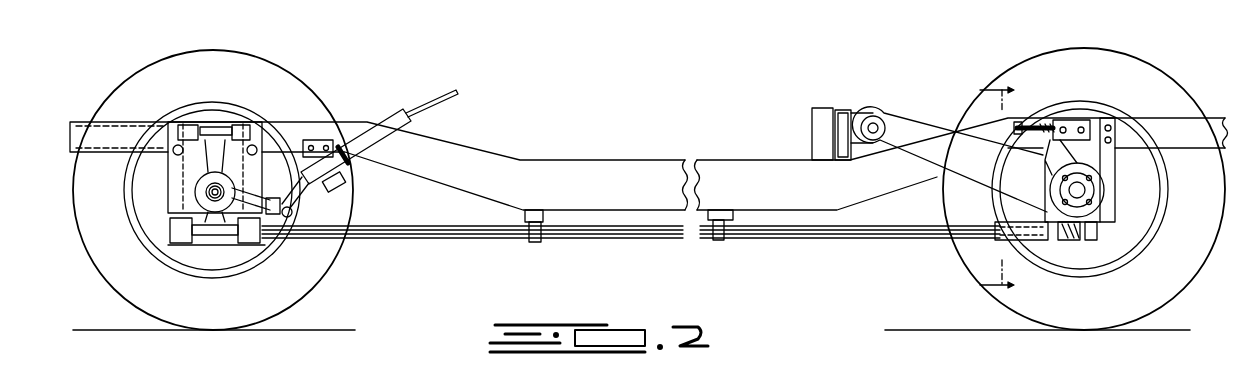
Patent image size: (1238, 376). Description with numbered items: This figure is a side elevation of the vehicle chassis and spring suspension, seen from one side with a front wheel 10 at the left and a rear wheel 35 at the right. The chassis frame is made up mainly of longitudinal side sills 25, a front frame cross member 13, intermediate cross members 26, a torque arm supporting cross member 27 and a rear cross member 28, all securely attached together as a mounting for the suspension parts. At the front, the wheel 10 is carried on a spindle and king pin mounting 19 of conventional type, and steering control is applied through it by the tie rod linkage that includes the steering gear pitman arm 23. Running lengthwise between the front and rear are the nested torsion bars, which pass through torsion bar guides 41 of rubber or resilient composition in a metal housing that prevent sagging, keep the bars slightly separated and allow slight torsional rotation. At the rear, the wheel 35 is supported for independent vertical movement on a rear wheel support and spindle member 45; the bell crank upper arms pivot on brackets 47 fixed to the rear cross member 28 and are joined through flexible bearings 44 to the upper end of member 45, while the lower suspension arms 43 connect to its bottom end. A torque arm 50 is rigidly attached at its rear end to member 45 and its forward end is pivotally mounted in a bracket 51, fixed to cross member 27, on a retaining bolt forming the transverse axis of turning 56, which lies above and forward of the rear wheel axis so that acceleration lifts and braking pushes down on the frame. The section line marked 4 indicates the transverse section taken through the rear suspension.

The front wheel 10 is at (292, 74).
The front frame cross member 13 is at (185, 170).
The spindle and king pin mounting 19 is at (213, 166).
The steering gear pitman arm 23 is at (314, 209).
The longitudinal side sill 25 is at (585, 165).
The intermediate cross member 26 is at (525, 214).
The torsion bar guide 41 is at (535, 243).
The torque arm supporting cross member 27 is at (818, 108).
The bracket 51 is at (860, 115).
The transverse axis of turning 56 is at (885, 118).
The torque arm 50 is at (910, 130).
The flexible bearing 44 is at (1046, 122).
The bracket 47 is at (1076, 125).
The rear cross member 28 is at (1100, 156).
The rear wheel support and spindle member 45 is at (1104, 182).
The lower suspension arm 43 is at (1083, 241).
The rear wheel 35 is at (1178, 280).
The section line 4- 4 is at (1005, 193).